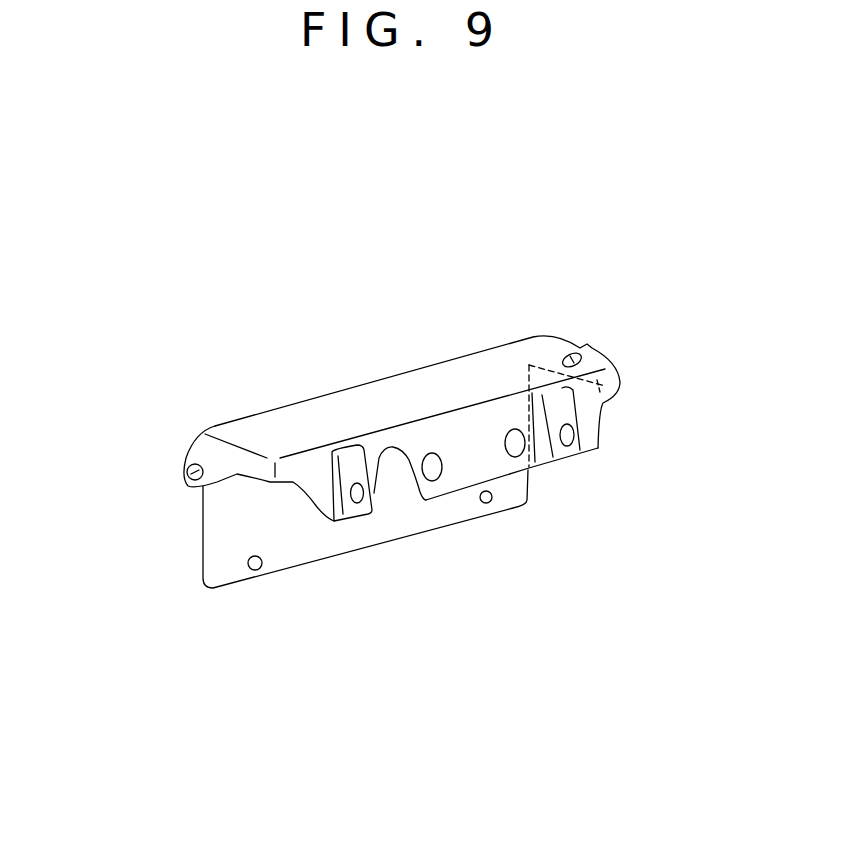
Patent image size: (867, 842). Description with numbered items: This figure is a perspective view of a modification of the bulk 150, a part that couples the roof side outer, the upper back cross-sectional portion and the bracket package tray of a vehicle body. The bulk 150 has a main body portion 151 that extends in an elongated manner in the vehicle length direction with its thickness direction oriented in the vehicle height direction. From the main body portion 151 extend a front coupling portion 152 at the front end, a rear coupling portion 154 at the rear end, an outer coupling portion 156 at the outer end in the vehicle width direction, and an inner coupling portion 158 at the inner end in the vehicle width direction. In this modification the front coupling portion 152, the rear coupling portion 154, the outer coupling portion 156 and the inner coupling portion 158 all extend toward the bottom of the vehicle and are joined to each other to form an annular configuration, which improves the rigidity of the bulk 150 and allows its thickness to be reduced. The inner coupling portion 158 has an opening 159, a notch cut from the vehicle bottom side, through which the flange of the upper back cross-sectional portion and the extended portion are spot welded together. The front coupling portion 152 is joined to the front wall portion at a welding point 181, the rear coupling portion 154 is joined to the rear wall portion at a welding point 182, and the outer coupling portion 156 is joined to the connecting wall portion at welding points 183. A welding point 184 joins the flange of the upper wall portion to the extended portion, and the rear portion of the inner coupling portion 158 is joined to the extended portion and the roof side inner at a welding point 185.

The bulk 150 is at (350, 318).
The main body portion 151 is at (443, 383).
The front coupling portion 152 is at (238, 463).
The rear coupling portion 154 is at (600, 392).
The outer coupling portion 156 is at (372, 512).
The inner coupling portion 158 is at (450, 473).
The opening 159 is at (415, 487).
The welding point 181 is at (187, 474).
The welding point 182 is at (585, 352).
The welding points 183 is at (254, 570).
The welding point 184 is at (357, 503).
The welding point 185 is at (574, 433).